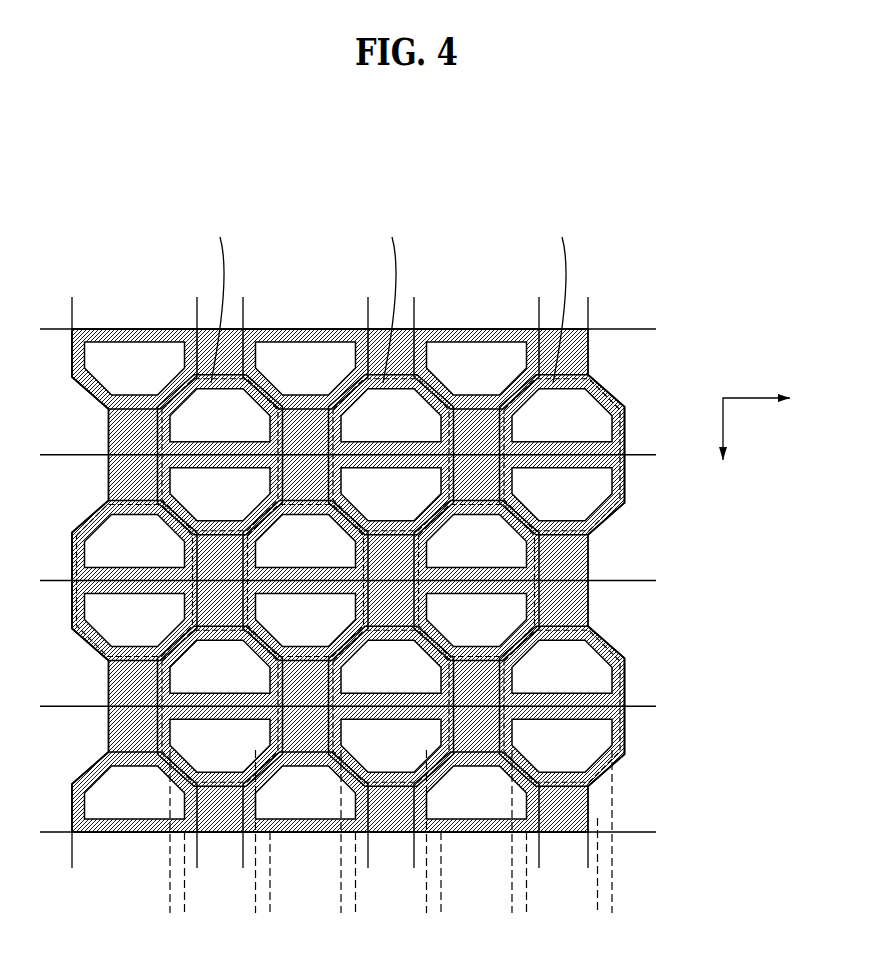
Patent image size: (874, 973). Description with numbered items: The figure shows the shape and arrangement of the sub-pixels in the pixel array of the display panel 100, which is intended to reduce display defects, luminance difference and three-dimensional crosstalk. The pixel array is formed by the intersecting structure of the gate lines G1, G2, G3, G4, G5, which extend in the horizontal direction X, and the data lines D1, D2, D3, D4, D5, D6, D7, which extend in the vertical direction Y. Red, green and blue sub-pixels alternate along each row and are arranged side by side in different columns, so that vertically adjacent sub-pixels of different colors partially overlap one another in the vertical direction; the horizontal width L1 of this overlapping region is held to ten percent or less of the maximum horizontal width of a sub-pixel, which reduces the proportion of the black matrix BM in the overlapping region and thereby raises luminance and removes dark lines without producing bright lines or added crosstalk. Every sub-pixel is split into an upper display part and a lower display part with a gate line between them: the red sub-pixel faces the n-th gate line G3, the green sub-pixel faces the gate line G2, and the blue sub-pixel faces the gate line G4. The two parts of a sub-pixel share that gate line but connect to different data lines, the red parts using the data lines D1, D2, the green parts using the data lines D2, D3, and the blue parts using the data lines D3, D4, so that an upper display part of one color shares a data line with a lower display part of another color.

The display panel 100 is at (408, 536).
The black matrix BM is at (572, 553).
The gate line G1 is at (333, 330).
The gate line G2 is at (333, 456).
The gate line G3 is at (333, 582).
The gate line G4 is at (333, 707).
The gate line G5 is at (333, 833).
The data line D1 is at (72, 568).
The data line D2 is at (197, 568).
The data line D3 is at (243, 568).
The data line D4 is at (368, 568).
The data line D5 is at (414, 568).
The data line D6 is at (539, 568).
The data line D7 is at (588, 568).
The horizontal width of vertically overlapping region L1 is at (634, 902).